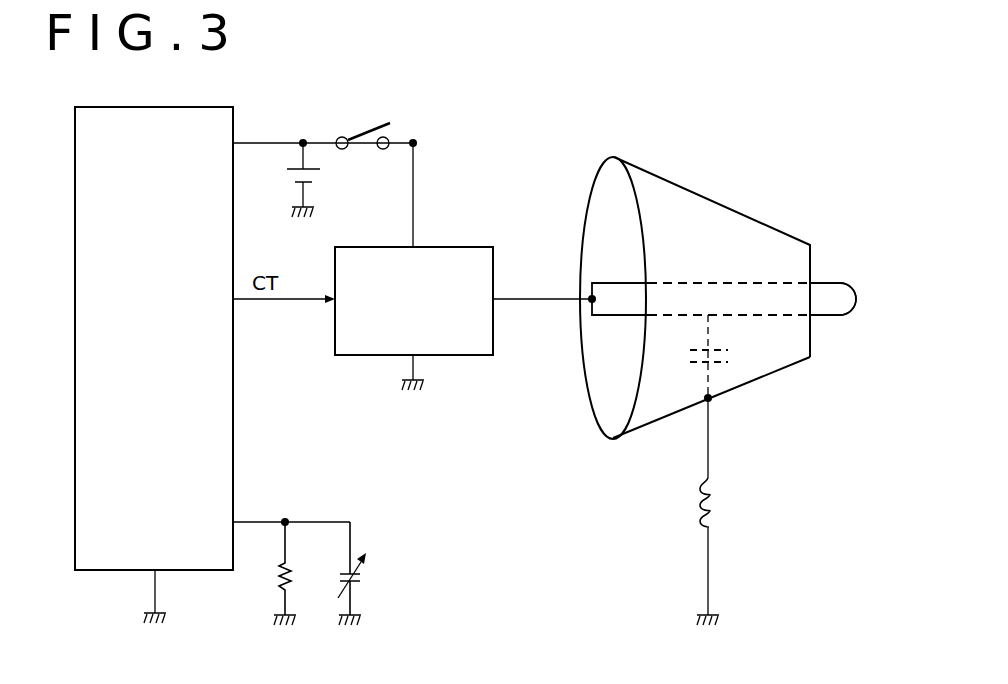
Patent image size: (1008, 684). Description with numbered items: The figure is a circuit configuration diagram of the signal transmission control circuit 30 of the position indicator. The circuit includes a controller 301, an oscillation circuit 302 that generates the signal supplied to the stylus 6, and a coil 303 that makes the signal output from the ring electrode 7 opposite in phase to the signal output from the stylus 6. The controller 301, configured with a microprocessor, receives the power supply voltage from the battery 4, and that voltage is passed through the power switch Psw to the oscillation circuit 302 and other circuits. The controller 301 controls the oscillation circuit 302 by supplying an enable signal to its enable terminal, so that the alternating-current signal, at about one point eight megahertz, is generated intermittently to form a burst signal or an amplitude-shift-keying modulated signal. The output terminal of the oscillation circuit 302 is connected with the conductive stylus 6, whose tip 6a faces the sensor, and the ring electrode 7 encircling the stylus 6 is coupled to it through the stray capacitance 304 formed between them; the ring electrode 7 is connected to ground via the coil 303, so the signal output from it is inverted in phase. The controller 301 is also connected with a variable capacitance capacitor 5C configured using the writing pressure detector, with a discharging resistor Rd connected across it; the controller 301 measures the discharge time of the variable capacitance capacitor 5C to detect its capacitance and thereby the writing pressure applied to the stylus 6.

The controller 301 is at (136, 107).
The oscillation circuit 302 is at (448, 247).
The coil 303 is at (720, 497).
The stray capacitance 304 is at (690, 356).
The signal transmission control circuit 30 is at (543, 143).
The battery 4 is at (316, 176).
The power switch Psw is at (368, 131).
The stylus 6 is at (757, 290).
The antenna tip 6a is at (840, 295).
The ring electrode 7 is at (754, 380).
The discharging resistor Rd is at (272, 582).
The variable capacitance capacitor 5C is at (365, 578).